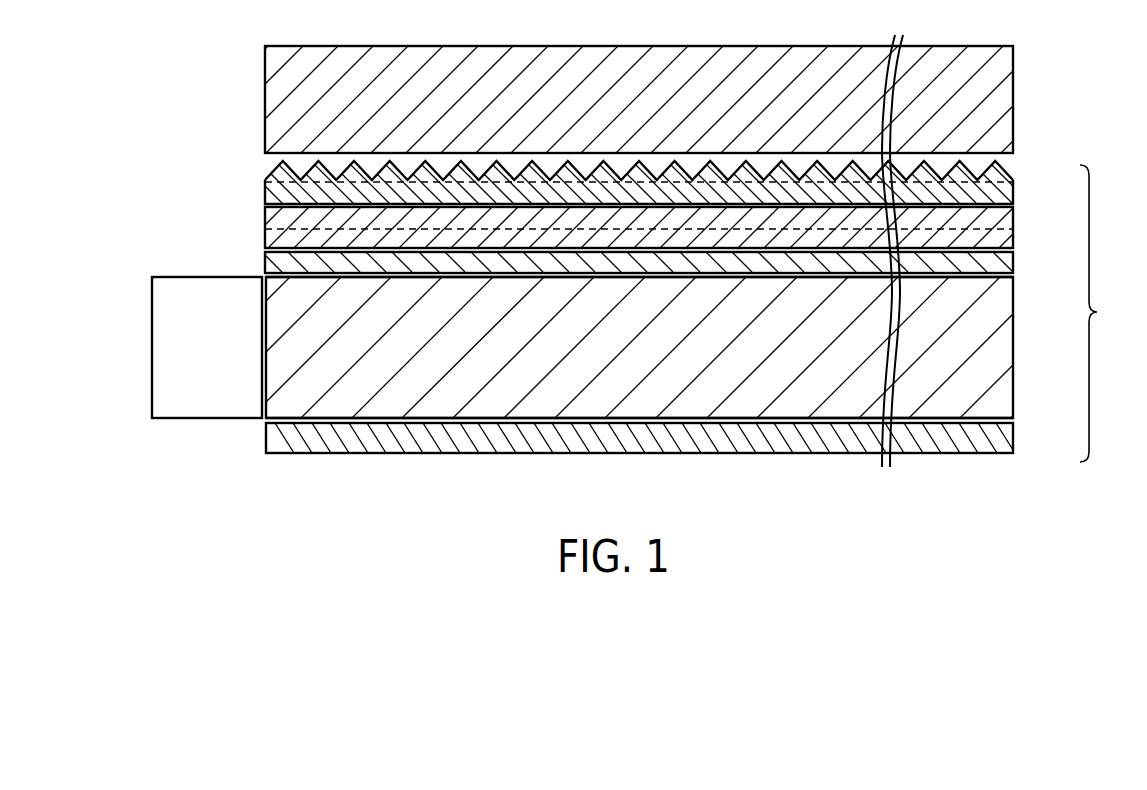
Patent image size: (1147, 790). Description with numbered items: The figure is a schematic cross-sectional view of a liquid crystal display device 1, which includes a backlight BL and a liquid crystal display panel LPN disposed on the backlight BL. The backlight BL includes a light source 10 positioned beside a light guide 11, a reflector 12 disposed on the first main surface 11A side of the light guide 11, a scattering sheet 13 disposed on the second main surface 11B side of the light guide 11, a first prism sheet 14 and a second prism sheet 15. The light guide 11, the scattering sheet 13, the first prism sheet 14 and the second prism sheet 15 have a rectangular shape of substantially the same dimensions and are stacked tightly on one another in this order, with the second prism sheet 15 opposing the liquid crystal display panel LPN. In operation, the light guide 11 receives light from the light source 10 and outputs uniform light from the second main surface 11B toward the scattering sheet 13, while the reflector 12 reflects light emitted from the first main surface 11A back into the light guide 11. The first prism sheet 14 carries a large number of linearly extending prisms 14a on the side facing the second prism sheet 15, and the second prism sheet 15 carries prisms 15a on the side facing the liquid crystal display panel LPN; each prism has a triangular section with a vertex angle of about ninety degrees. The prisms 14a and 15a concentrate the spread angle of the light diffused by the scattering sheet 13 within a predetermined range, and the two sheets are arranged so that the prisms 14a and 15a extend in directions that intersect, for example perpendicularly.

The liquid crystal display device 1 is at (1022, 33).
The light source 10 is at (152, 345).
The light guide 11 is at (1013, 355).
The first main surface 11A is at (284, 426).
The second main surface 11B is at (284, 268).
The reflector 12 is at (1013, 438).
The scattering sheet 13 is at (1013, 263).
The first prism sheet 14 is at (1013, 232).
The prisms 14a is at (272, 222).
The second prism sheet 15 is at (1013, 192).
The prisms 15a is at (278, 165).
The backlight BL is at (1106, 313).
The liquid crystal display panel LPN is at (1013, 98).